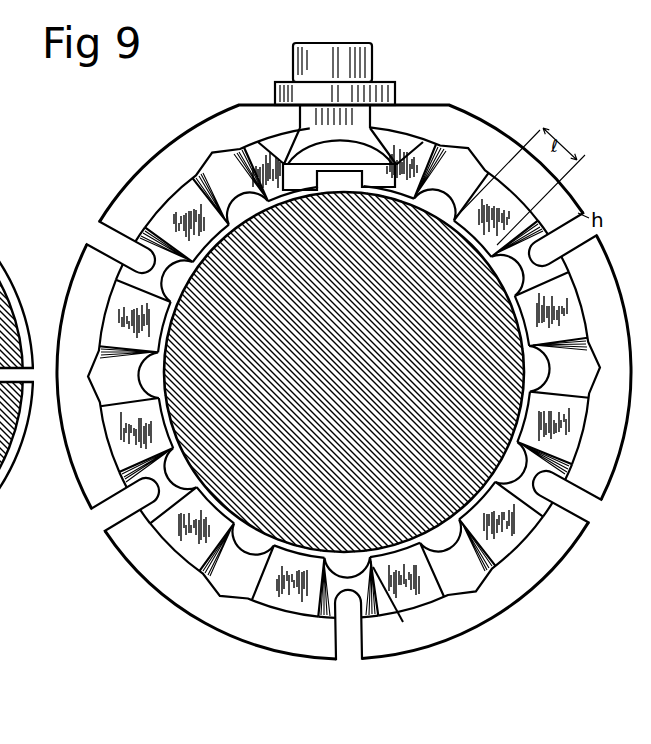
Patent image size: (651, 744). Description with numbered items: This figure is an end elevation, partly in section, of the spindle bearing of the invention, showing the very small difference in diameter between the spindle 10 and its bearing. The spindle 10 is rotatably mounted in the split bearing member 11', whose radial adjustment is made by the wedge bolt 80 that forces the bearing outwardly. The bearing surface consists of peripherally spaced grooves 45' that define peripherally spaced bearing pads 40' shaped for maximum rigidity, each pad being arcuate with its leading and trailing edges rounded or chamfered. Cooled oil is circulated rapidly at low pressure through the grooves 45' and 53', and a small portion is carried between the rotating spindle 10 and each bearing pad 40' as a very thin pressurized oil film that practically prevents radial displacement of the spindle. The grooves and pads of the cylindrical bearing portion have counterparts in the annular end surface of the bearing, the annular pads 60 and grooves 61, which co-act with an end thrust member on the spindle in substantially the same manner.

The spindle 10 is at (215, 497).
The bearing pad 40' is at (344, 387).
The bearing member 11' is at (343, 421).
The groove 53' is at (344, 451).
The groove 45' is at (426, 626).
The annular groove 61 is at (477, 568).
The annular pad 60 is at (485, 183).
The wedge bolt 80 is at (356, 146).